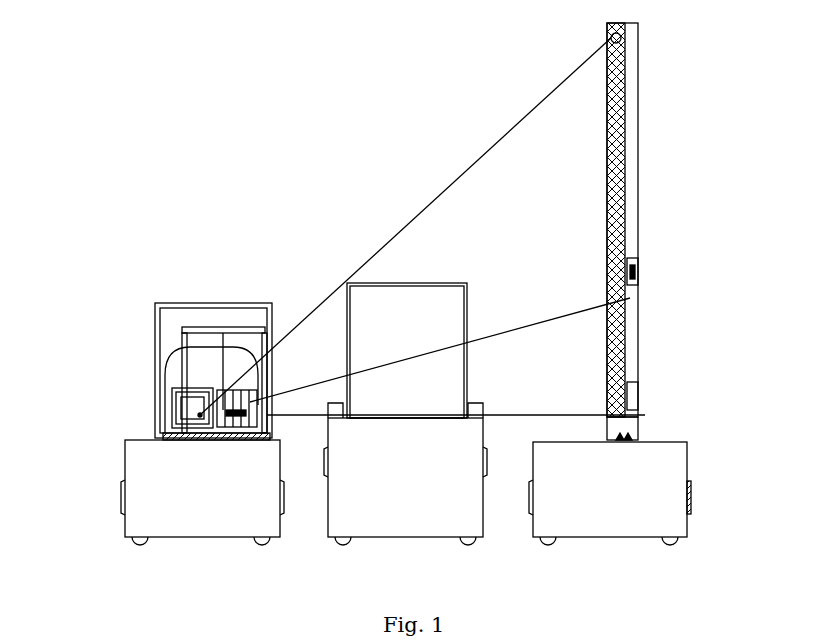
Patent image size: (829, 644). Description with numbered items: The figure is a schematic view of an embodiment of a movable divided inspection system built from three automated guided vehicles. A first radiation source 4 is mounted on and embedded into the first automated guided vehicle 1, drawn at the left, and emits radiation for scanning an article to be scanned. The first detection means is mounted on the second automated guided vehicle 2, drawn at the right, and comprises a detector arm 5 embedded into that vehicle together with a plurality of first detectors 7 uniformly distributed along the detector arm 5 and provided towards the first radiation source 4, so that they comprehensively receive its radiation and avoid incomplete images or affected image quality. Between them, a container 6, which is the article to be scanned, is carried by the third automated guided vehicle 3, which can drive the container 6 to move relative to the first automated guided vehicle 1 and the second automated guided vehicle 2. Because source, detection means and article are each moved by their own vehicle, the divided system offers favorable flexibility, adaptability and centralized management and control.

The first automated guided vehicle 1 is at (168, 484).
The second automated guided vehicle 2 is at (644, 477).
The third automated guided vehicle 3 is at (405, 495).
The first radiation source 4 is at (162, 371).
The detector arm 5 is at (678, 299).
The container 6 is at (446, 337).
The first detector 7 is at (667, 231).